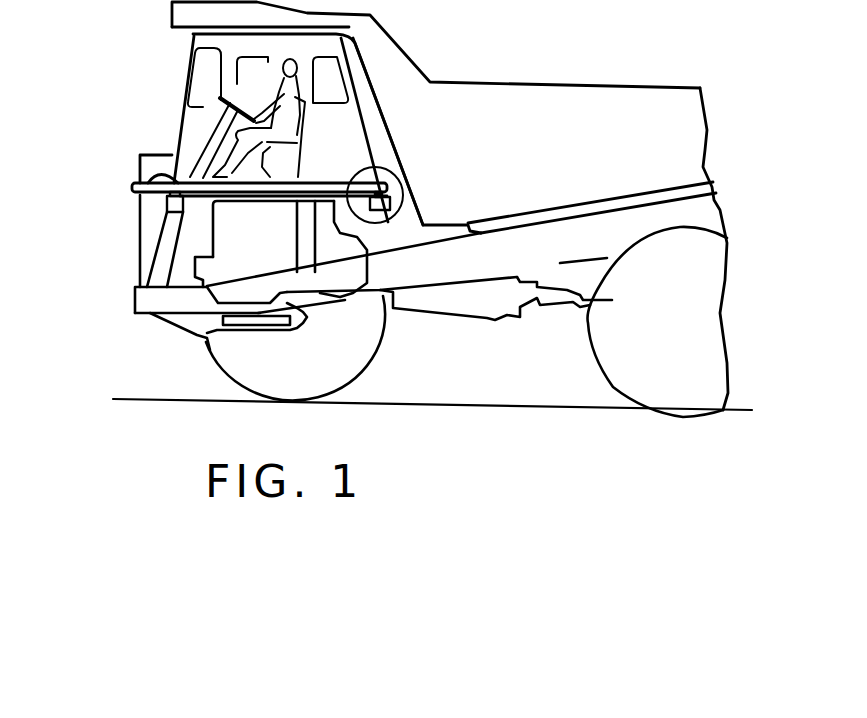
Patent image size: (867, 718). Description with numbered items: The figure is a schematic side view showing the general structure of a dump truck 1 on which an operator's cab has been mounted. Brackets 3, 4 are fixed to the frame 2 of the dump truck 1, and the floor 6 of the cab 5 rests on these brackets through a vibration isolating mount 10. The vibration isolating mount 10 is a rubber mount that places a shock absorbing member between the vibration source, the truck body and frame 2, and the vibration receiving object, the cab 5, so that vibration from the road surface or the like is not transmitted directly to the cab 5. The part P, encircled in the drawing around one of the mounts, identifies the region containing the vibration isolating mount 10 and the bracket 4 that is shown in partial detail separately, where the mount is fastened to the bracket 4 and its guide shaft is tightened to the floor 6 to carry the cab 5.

The dump truck 1 is at (557, 86).
The frame 2 is at (487, 258).
The bracket 3 is at (167, 255).
The bracket 4 is at (313, 210).
The cab 5 is at (198, 50).
The floor 6 is at (152, 169).
The vibration isolating mount 10 is at (160, 197).
The part P is at (378, 168).